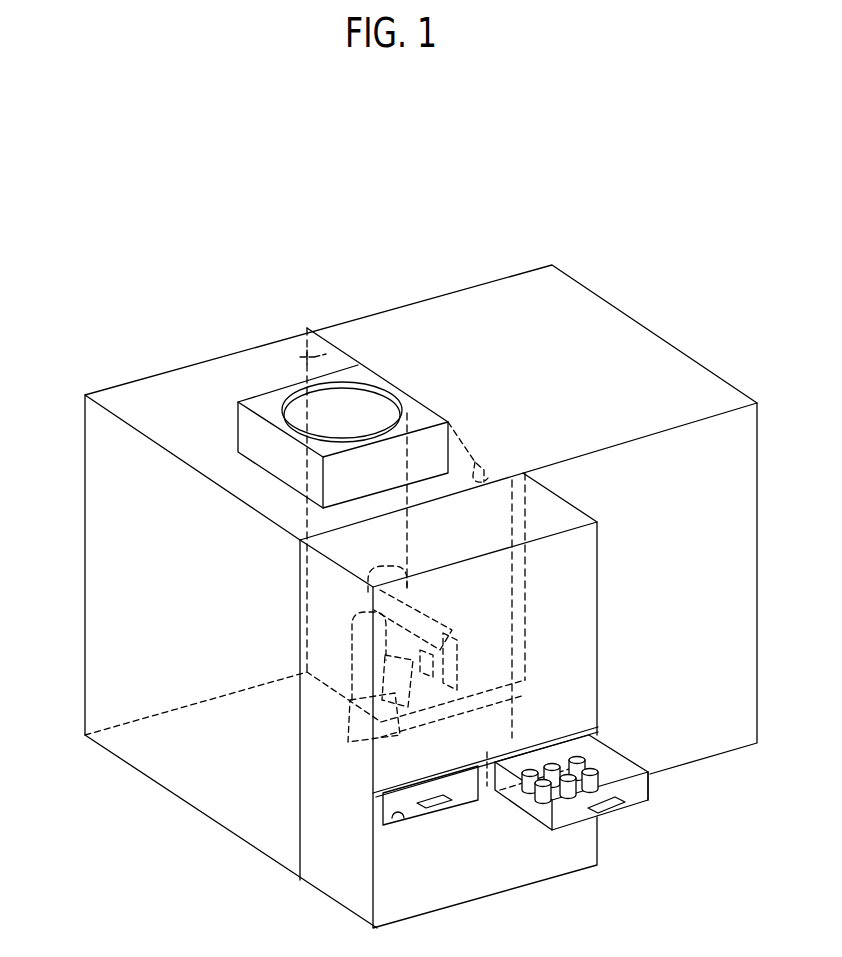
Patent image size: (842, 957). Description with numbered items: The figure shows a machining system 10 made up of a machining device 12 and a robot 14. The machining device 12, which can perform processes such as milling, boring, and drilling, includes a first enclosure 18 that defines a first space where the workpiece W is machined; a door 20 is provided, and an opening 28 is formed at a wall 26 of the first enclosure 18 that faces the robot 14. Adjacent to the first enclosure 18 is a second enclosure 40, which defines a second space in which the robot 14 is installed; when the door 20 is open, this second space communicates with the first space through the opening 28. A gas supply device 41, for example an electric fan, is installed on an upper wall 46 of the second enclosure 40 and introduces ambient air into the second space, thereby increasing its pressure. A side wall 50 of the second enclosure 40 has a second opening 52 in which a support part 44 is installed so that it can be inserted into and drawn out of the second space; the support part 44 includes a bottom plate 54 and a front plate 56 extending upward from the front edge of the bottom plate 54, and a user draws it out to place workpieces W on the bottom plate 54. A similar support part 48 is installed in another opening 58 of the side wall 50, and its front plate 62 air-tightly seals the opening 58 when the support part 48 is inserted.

The machining system 10 is at (641, 131).
The machining device 12 is at (469, 256).
The robot 14 is at (343, 636).
The first enclosure 18 is at (582, 335).
The door 20 is at (452, 507).
The wall 26 is at (296, 357).
The opening 28 is at (493, 480).
The second enclosure 40 is at (81, 455).
The gas supply device 41 is at (263, 403).
The support part 44 is at (628, 822).
The upper wall 46 is at (172, 406).
The support part 48 is at (445, 816).
The side wall 50 is at (570, 610).
The opening 52 is at (555, 748).
The bottom plate 54 is at (604, 777).
The front plate 56 is at (644, 787).
The opening 58 is at (398, 820).
The front plate 62 is at (477, 794).
The workpiece W is at (573, 780).